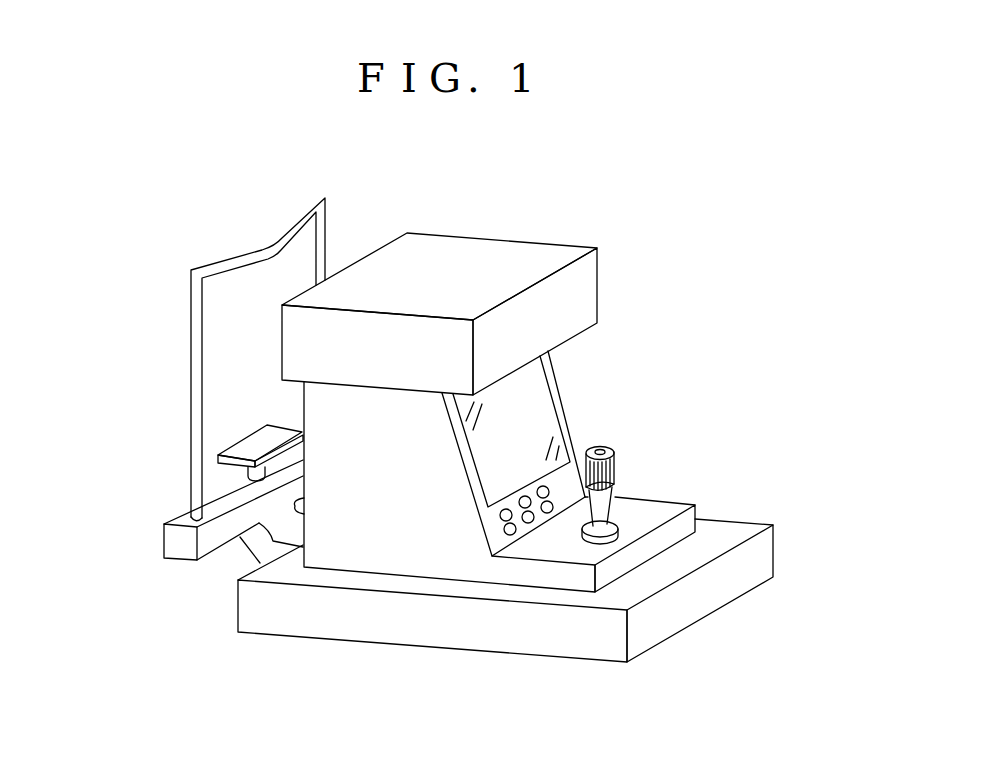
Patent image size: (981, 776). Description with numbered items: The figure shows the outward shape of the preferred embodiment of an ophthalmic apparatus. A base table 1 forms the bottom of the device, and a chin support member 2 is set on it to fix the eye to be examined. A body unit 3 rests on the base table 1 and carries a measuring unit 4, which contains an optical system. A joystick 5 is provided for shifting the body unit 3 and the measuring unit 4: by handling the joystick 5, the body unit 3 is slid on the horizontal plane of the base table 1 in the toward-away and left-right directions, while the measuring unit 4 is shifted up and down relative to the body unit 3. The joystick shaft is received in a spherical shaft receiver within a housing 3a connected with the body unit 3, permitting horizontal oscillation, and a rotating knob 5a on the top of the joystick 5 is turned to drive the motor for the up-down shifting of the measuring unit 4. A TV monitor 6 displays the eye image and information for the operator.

The base table 1 is at (348, 620).
The chin support member 2 is at (176, 591).
The body unit 3 is at (405, 528).
The housing 3a is at (625, 557).
The measuring unit 4 is at (460, 260).
The joystick 5 is at (652, 466).
The rotating knob 5a is at (618, 457).
The TV monitor 6 is at (540, 408).